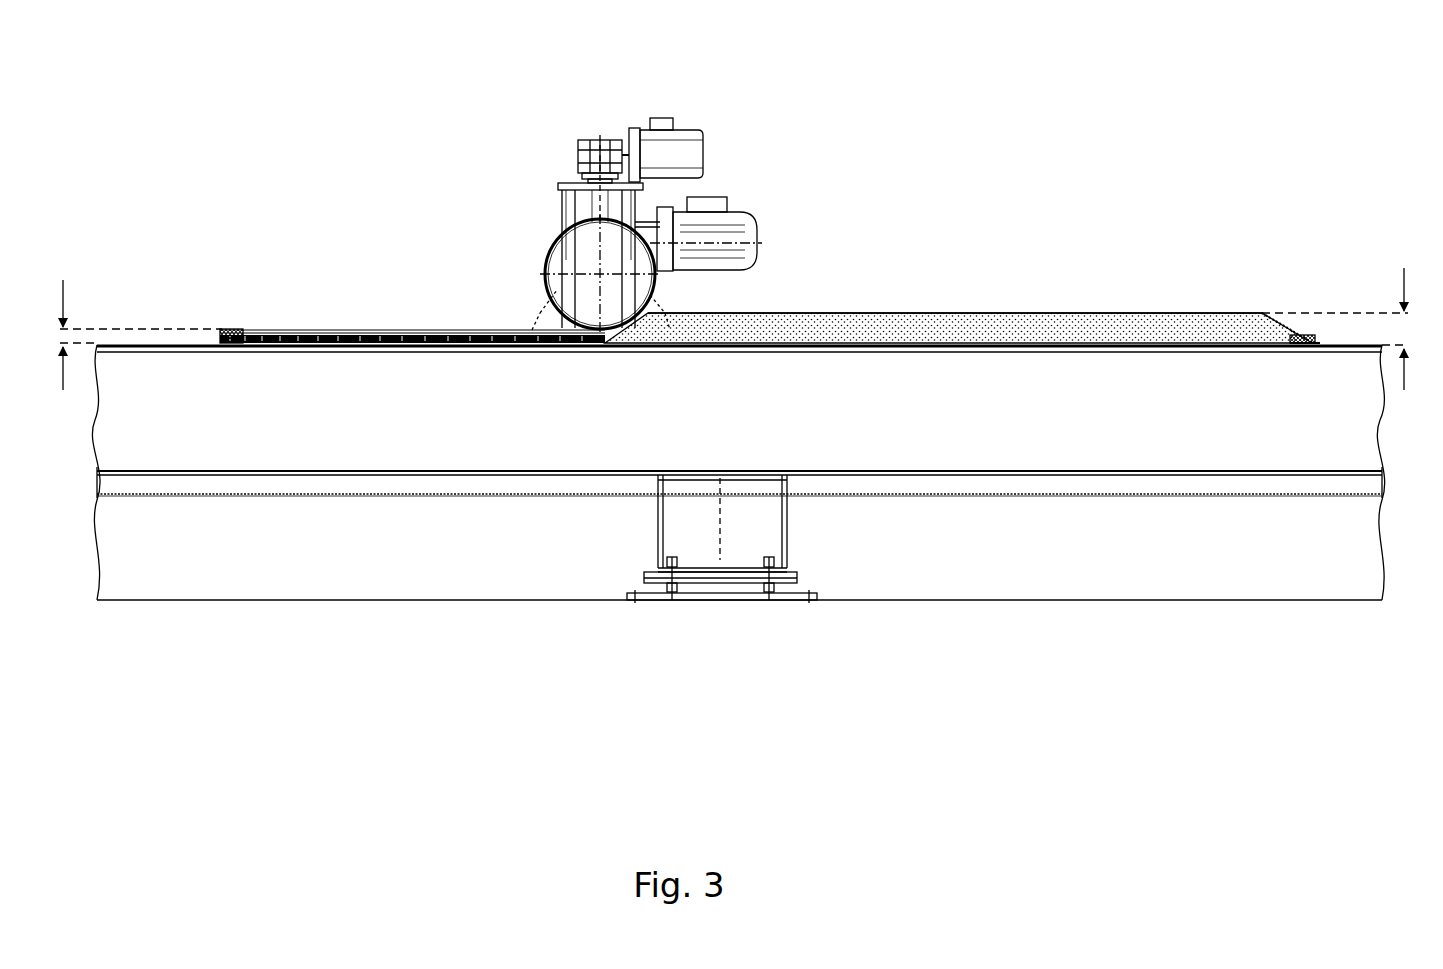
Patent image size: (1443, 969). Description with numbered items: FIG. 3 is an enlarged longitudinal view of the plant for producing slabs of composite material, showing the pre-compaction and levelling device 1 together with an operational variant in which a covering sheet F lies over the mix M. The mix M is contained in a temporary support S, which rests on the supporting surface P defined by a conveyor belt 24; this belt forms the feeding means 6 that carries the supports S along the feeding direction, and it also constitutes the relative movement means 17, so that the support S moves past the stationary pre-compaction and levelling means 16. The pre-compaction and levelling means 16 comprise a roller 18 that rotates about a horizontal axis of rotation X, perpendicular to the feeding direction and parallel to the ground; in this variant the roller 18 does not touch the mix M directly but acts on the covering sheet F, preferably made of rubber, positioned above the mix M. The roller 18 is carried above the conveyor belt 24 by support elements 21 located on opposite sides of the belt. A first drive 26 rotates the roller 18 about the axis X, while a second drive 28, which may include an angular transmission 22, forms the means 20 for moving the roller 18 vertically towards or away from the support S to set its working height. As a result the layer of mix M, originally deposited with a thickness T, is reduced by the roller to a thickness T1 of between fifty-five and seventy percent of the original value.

The device 1 is at (863, 151).
The feeding means 6 is at (1323, 497).
The pre-compaction and levelling means 16 is at (520, 227).
The relative movement means 17 is at (312, 471).
The roller 18 is at (545, 263).
The means for moving the roller 20 is at (804, 126).
The support elements 21 is at (557, 210).
The angular transmission 22 is at (599, 108).
The conveyor belt 24 is at (1117, 435).
The first drive 26 is at (755, 266).
The second drive 28 is at (703, 155).
The supporting surface P is at (163, 343).
The mix M is at (337, 330).
The covering sheet F is at (1290, 320).
The support S is at (1318, 347).
The thickness T is at (1335, 324).
The reduced thickness T1 is at (141, 325).
The axis of rotation X is at (603, 277).